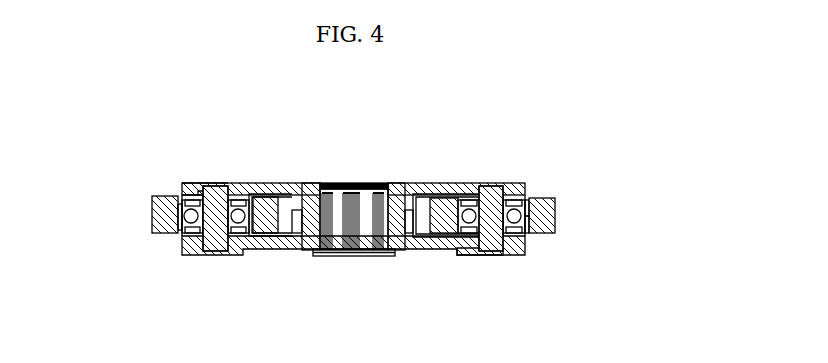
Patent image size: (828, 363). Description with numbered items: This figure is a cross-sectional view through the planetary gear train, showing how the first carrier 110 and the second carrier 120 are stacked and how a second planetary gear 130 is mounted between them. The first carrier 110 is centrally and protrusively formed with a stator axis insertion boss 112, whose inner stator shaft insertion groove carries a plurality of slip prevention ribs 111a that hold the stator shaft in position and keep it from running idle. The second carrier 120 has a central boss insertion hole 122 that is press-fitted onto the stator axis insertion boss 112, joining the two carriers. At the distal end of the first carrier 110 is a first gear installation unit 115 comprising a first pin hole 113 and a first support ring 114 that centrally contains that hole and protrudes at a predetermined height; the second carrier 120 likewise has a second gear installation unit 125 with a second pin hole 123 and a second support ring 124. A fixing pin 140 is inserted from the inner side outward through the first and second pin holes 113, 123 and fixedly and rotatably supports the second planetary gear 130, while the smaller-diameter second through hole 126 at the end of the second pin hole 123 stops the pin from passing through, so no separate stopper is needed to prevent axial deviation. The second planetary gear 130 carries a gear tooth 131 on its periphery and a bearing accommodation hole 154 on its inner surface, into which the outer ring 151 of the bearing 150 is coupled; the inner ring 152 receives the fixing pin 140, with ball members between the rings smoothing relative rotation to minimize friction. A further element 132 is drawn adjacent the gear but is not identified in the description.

The first carrier 110 is at (282, 249).
The slip prevention ribs 111a is at (352, 197).
The stator axis insertion boss 112 is at (392, 190).
The first pin hole 113 is at (206, 250).
The first support ring 114 is at (184, 233).
The first gear installation unit 115 is at (140, 243).
The second carrier 120 is at (440, 186).
The boss insertion hole 122 is at (306, 183).
The second pin hole 123 is at (498, 186).
The second support ring 124 is at (485, 152).
The second gear installation unit 125 is at (502, 171).
The second through hole 126 is at (213, 183).
The second planetary gear 130 is at (108, 205).
The gear tooth 131 is at (158, 204).
The washer 132 is at (182, 220).
The fixing pin 140 is at (492, 255).
The bearing 150 is at (593, 215).
The outer ring 151 is at (528, 219).
The inner ring 152 is at (526, 233).
The bearing accommodation hole 154 is at (528, 212).